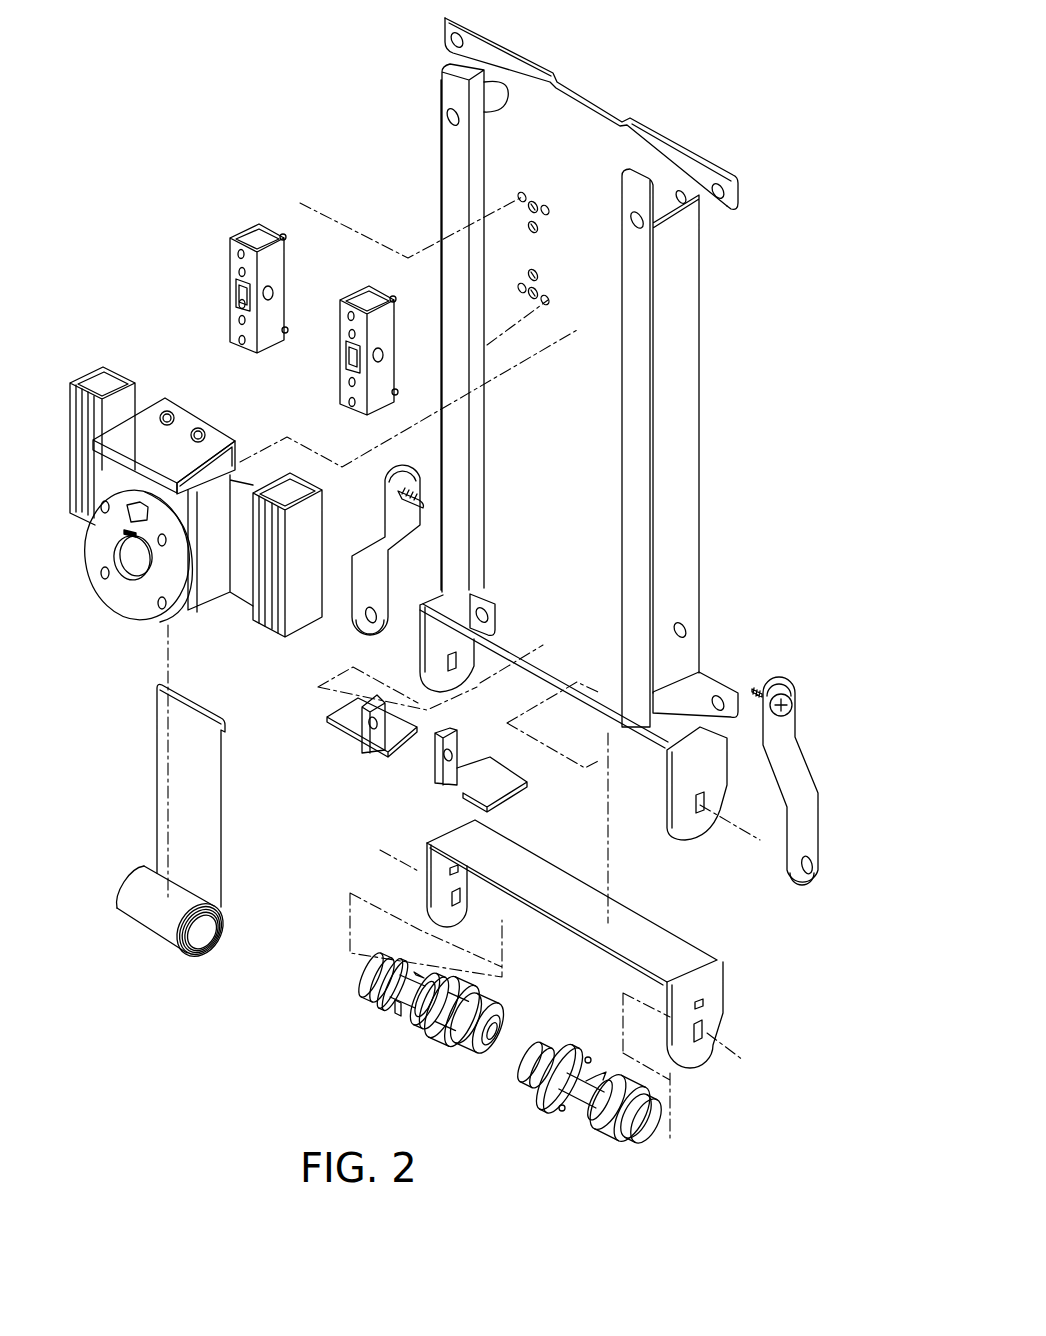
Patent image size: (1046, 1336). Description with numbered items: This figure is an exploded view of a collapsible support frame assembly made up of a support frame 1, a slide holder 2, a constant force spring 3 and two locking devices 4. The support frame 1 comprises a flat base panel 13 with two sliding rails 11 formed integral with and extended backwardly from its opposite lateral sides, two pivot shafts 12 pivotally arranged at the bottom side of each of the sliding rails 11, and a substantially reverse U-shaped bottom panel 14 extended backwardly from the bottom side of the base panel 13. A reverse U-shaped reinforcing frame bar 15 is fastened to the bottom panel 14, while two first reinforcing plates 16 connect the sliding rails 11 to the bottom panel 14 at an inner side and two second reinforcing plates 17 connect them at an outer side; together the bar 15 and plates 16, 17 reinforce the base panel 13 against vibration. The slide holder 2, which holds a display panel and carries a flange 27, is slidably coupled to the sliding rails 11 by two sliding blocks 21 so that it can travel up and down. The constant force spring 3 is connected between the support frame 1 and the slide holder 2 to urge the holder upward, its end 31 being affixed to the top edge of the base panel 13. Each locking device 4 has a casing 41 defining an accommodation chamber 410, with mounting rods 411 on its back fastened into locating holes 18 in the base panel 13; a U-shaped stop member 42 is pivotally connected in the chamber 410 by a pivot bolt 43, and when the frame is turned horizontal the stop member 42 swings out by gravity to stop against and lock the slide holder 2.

The support frame 1 is at (672, 385).
The sliding rails 11 is at (485, 152).
The pivot shafts 12 is at (392, 988).
The flat base panel 13 is at (583, 135).
The reverse U-shaped bottom panel 14 is at (557, 666).
The reverse U-shaped reinforcing frame bar 15 is at (635, 925).
The first reinforcing plates 16 is at (372, 735).
The second reinforcing plates 17 is at (375, 560).
The locating holes 18 is at (520, 196).
The slide holder 2 is at (190, 420).
The sliding blocks 21 is at (105, 375).
The flange 27 is at (245, 458).
The constant force spring 3 is at (210, 930).
The end 31 is at (203, 705).
The locking device 4 is at (232, 226).
The casing 41 is at (238, 258).
The stop member 42 is at (238, 293).
The pivot bolt 43 is at (273, 298).
The accommodation chamber 410 is at (240, 312).
The mounting rods 411 is at (262, 222).